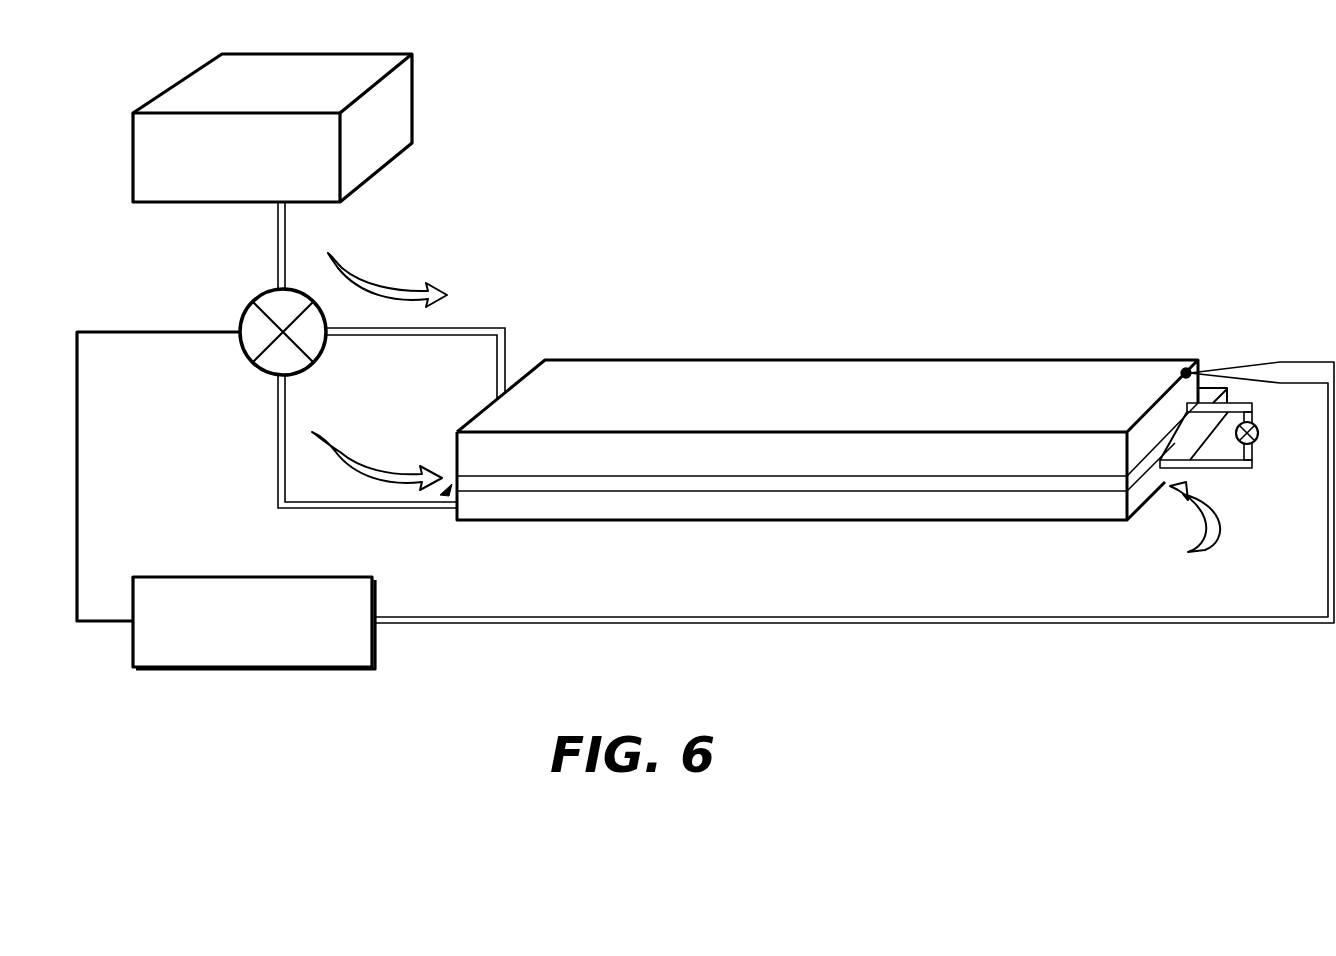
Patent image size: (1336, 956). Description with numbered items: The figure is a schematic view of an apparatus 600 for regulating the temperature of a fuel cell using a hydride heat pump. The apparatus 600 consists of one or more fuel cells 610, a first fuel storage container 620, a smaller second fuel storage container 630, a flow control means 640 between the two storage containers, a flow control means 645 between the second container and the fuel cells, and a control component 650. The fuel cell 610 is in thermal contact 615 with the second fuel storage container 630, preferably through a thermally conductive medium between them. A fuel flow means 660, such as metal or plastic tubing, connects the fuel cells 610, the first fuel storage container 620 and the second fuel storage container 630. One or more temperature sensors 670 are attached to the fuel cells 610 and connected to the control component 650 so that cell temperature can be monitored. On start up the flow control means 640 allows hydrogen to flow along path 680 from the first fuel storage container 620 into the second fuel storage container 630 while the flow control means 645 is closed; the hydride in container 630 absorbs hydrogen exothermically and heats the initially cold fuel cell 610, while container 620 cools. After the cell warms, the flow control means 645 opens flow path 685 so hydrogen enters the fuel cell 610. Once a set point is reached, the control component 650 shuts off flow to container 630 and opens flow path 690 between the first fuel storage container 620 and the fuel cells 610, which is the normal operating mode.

The apparatus 600 is at (1020, 710).
The fuel cell 610 is at (818, 380).
The thermal contact 615 is at (450, 487).
The first fuel storage container 620 is at (272, 172).
The second fuel storage container 630 is at (657, 522).
The flow control means 640 is at (256, 367).
The flow control means 645 is at (1257, 445).
The control component 650 is at (226, 500).
The fuel flow means 660 is at (490, 325).
The temperature sensor 670 is at (1255, 366).
The flow path 680 is at (357, 478).
The flow path 685 is at (1200, 538).
The flow path 690 is at (378, 292).